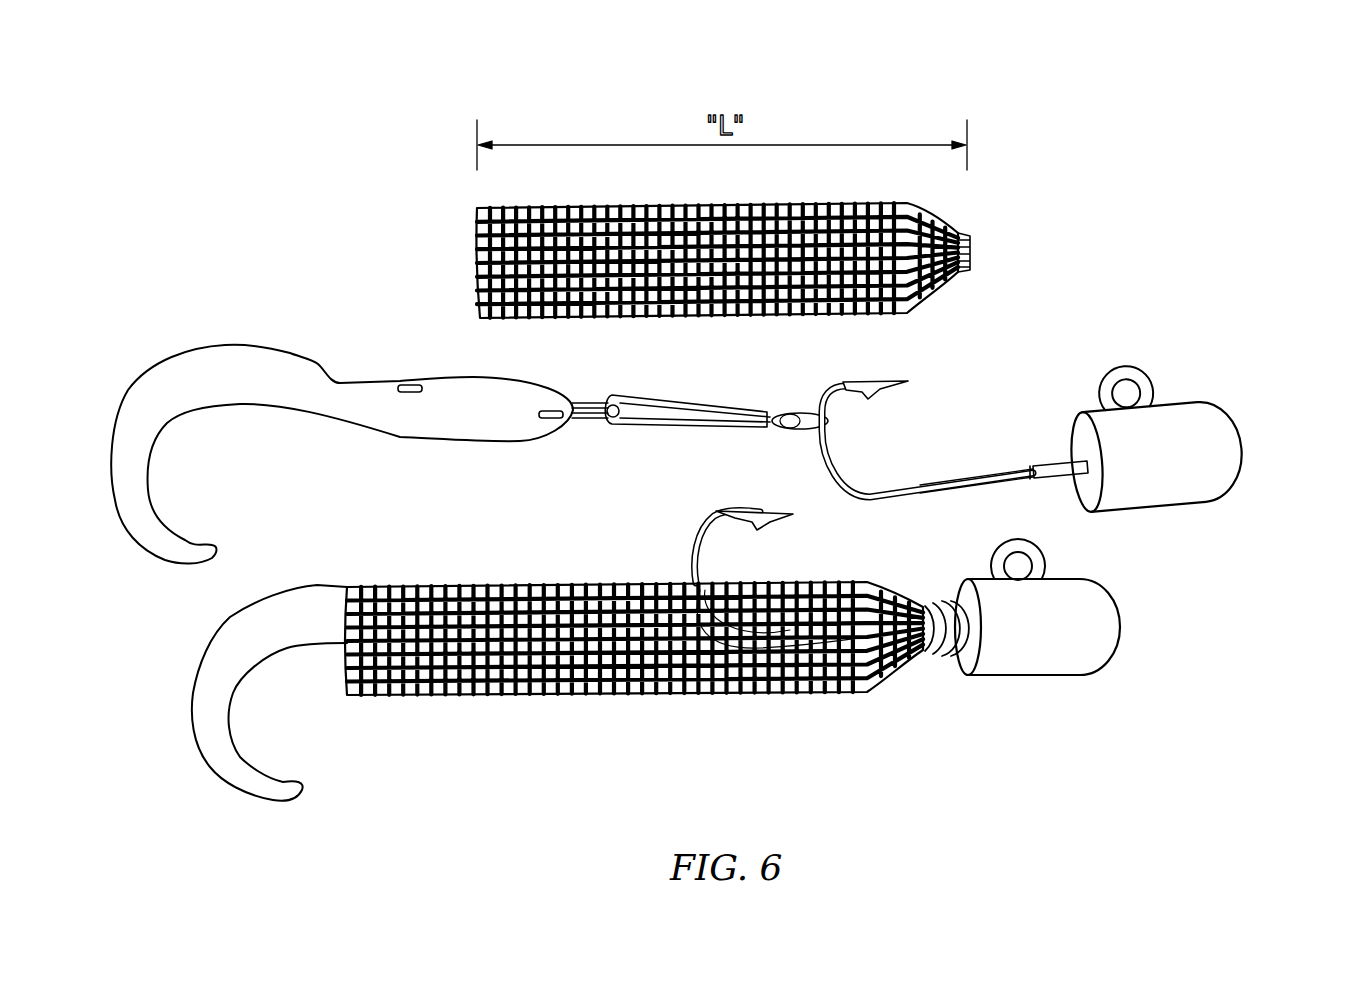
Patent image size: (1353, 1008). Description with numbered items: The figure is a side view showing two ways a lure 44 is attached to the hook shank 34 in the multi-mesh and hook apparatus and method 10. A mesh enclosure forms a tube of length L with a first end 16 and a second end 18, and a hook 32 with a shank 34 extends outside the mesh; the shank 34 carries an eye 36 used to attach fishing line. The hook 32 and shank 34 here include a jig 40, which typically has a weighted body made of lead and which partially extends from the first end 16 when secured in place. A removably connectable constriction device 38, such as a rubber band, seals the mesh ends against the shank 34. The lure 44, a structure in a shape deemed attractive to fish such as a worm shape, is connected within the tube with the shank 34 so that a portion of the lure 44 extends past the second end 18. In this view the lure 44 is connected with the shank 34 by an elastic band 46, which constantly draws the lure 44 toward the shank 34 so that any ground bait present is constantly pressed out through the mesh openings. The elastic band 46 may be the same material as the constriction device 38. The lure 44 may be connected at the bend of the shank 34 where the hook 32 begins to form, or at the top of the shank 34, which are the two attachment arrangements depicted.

The multi-mesh and hook apparatus and method 10 is at (1088, 83).
The first end 16 is at (975, 243).
The second end 18 is at (478, 242).
The hook 32 is at (882, 378).
The shank 34 is at (957, 490).
The eye 36 is at (1152, 380).
The connectable constriction device 38 is at (933, 657).
The jig 40 is at (1246, 442).
The lure 44 is at (165, 383).
The elastic band 46 is at (652, 428).